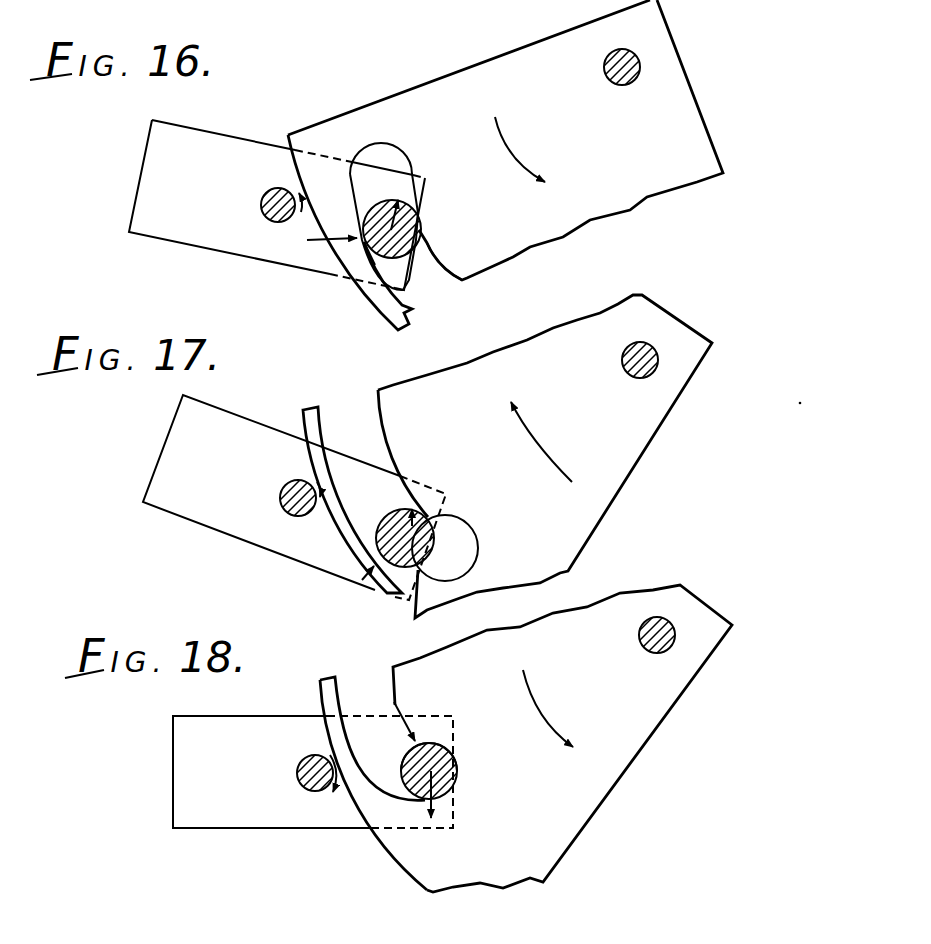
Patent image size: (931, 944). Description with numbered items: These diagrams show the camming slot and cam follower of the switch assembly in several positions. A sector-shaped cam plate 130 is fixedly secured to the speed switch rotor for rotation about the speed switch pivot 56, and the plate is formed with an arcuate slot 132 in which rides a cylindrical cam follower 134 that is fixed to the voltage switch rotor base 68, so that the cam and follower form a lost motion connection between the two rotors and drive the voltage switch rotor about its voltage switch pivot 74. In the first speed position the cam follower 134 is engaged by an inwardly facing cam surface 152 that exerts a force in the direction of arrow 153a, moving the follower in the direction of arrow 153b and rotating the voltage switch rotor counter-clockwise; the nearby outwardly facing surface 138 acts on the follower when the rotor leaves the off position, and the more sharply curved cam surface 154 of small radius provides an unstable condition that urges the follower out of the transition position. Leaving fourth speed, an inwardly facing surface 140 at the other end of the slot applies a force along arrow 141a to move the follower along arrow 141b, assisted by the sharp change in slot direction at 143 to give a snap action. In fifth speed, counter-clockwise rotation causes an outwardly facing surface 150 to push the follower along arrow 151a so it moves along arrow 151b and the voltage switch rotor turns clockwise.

In FIG. 16, the speed switch pivot 56 is at (638, 62).
In FIG. 17, the speed switch pivot 56 is at (652, 345).
In FIG. 18, the speed switch pivot 56 is at (671, 620).
In FIG. 16, the voltage switch rotor base 68 is at (193, 243).
In FIG. 17, the voltage switch rotor base 68 is at (227, 528).
In FIG. 18, the voltage switch rotor base 68 is at (290, 823).
In FIG. 16, the voltage switch pivot 74 is at (261, 200).
In FIG. 17, the voltage switch pivot 74 is at (280, 490).
In FIG. 18, the voltage switch pivot 74 is at (297, 763).
In FIG. 16, the cam plate 130 is at (614, 161).
In FIG. 17, the cam plate 130 is at (614, 410).
In FIG. 18, the cam plate 130 is at (531, 773).
In FIG. 16, the arcuate slot 132 is at (395, 306).
In FIG. 17, the arcuate slot 132 is at (383, 418).
In FIG. 18, the arcuate slot 132 is at (398, 686).
In FIG. 16, the cam follower 134 is at (416, 232).
In FIG. 17, the cam follower 134 is at (378, 536).
In FIG. 18, the cam follower 134 is at (413, 748).
In FIG. 16, the outwardly facing surface 138 is at (383, 147).
In FIG. 17, the inwardly facing surface 140 is at (385, 589).
In FIG. 17, the arrow 141a is at (362, 579).
In FIG. 17, the arrow 141b is at (411, 508).
In FIG. 17, the sharp change in direction of the cam slot surface 143 is at (432, 517).
In FIG. 18, the outwardly facing surface 150 is at (440, 745).
In FIG. 18, the arrow 151a is at (396, 708).
In FIG. 18, the arrow 151b is at (452, 795).
In FIG. 16, the inwardly facing cam surface 152 is at (365, 245).
In FIG. 16, the arrow 153a is at (306, 242).
In FIG. 16, the arrow 153b is at (388, 222).
In FIG. 16, the sharply curved cam surface 154 is at (430, 243).